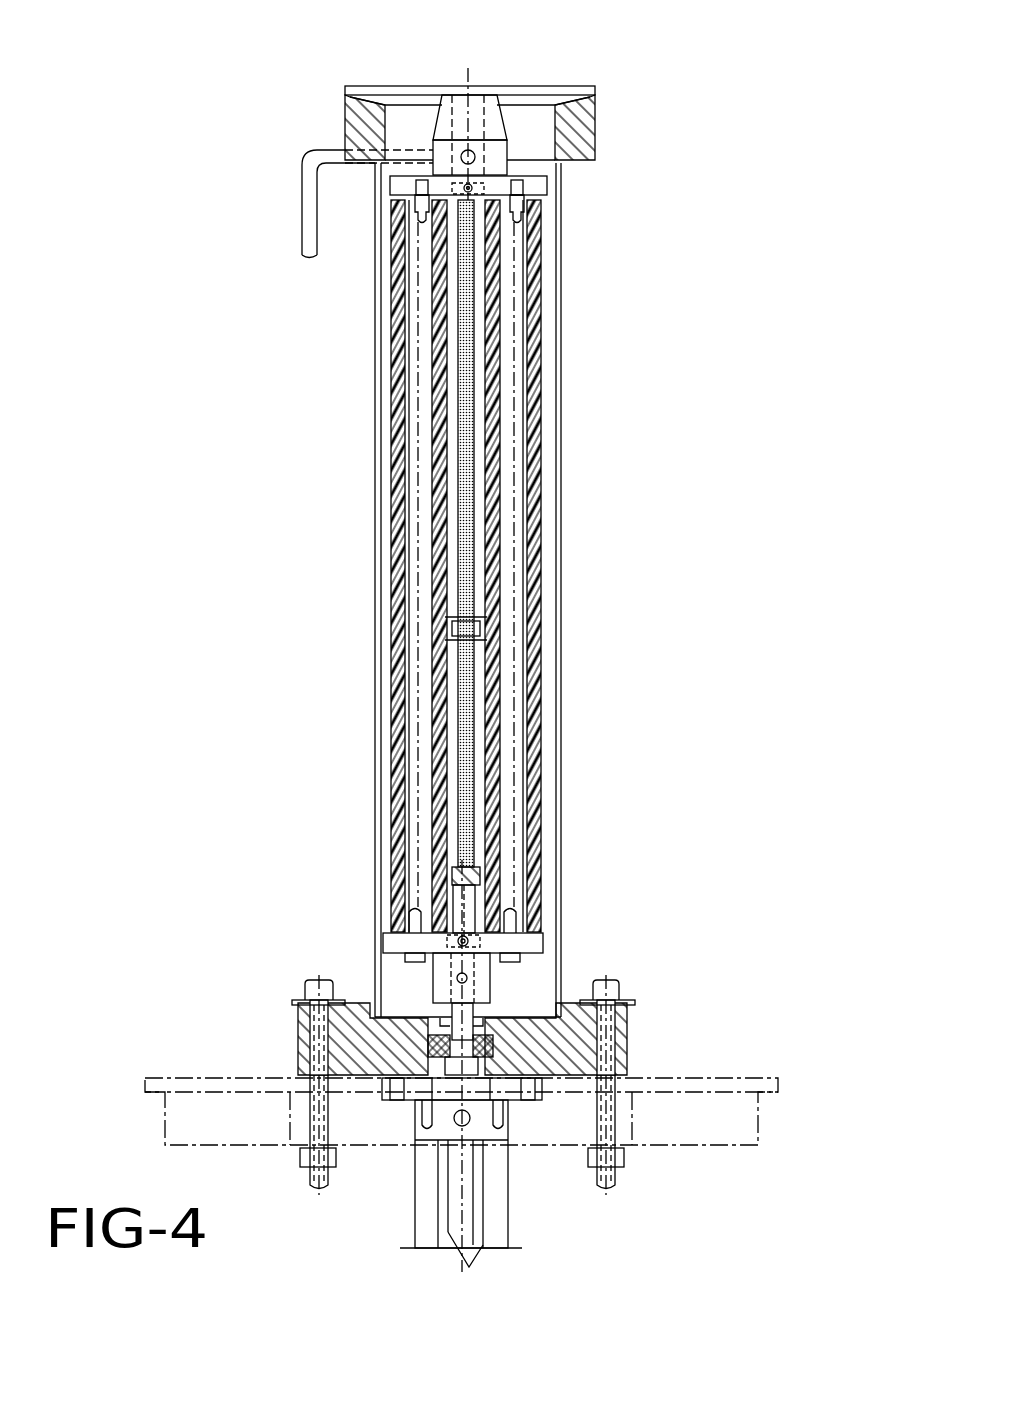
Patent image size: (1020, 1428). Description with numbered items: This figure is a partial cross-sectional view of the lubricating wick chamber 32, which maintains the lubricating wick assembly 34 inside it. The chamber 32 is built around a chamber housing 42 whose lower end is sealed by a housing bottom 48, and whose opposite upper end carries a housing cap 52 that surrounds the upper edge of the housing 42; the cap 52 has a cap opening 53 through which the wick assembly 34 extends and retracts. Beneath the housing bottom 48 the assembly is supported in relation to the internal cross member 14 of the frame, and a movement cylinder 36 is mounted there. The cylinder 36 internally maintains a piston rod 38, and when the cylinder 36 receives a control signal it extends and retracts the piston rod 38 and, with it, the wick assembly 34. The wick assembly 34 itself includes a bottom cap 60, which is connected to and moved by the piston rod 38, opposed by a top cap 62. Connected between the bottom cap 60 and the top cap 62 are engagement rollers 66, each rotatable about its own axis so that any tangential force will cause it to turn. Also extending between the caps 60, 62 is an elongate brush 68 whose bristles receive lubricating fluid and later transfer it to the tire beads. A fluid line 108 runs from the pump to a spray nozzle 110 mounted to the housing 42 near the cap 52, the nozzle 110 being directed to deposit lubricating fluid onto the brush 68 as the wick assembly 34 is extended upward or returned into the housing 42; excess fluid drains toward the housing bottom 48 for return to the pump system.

The internal cross member 14 is at (673, 1080).
The lubricating wick chamber 32 is at (644, 522).
The lubricating wick assembly 34 is at (521, 146).
The movement cylinder 36 is at (502, 1193).
The piston rod 38 is at (457, 995).
The chamber housing 42 is at (555, 673).
The housing bottom 48 is at (522, 1000).
The housing cap 52 is at (577, 130).
The cap opening 53 is at (414, 79).
The bottom cap 60 is at (533, 945).
The top cap 62 is at (540, 185).
The engagement roller 66 is at (535, 330).
The elongate brush 68 is at (470, 400).
The fluid line 108 is at (312, 220).
The spray nozzle 110 is at (476, 158).